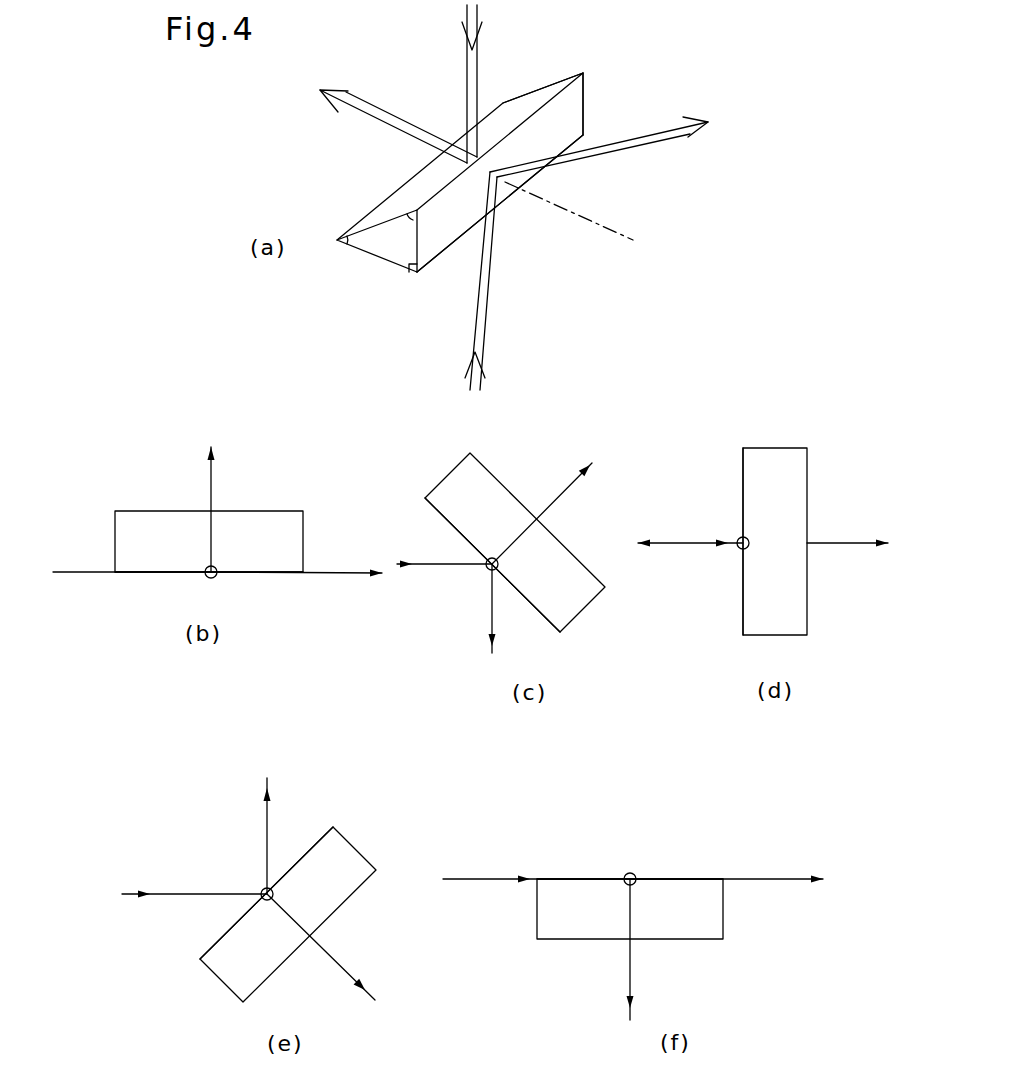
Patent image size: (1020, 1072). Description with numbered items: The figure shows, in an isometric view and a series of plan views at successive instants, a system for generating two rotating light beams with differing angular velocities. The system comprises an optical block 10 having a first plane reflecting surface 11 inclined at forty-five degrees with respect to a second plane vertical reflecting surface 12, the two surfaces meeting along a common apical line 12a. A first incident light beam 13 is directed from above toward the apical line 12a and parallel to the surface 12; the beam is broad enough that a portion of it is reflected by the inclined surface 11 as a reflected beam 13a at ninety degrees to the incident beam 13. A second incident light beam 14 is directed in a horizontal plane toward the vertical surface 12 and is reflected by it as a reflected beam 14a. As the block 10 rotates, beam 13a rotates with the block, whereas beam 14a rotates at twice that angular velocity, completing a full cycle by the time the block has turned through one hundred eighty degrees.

The optical block 10 is at (375, 262).
The first plane reflecting surface 11 is at (397, 202).
The second plane vertical reflecting surface 12 is at (443, 240).
The apical line 12a is at (537, 108).
The first incident light beam 13 is at (478, 54).
The reflected beam 13a is at (367, 87).
The second incident light beam 14 is at (488, 327).
The reflected beam 14a is at (660, 140).